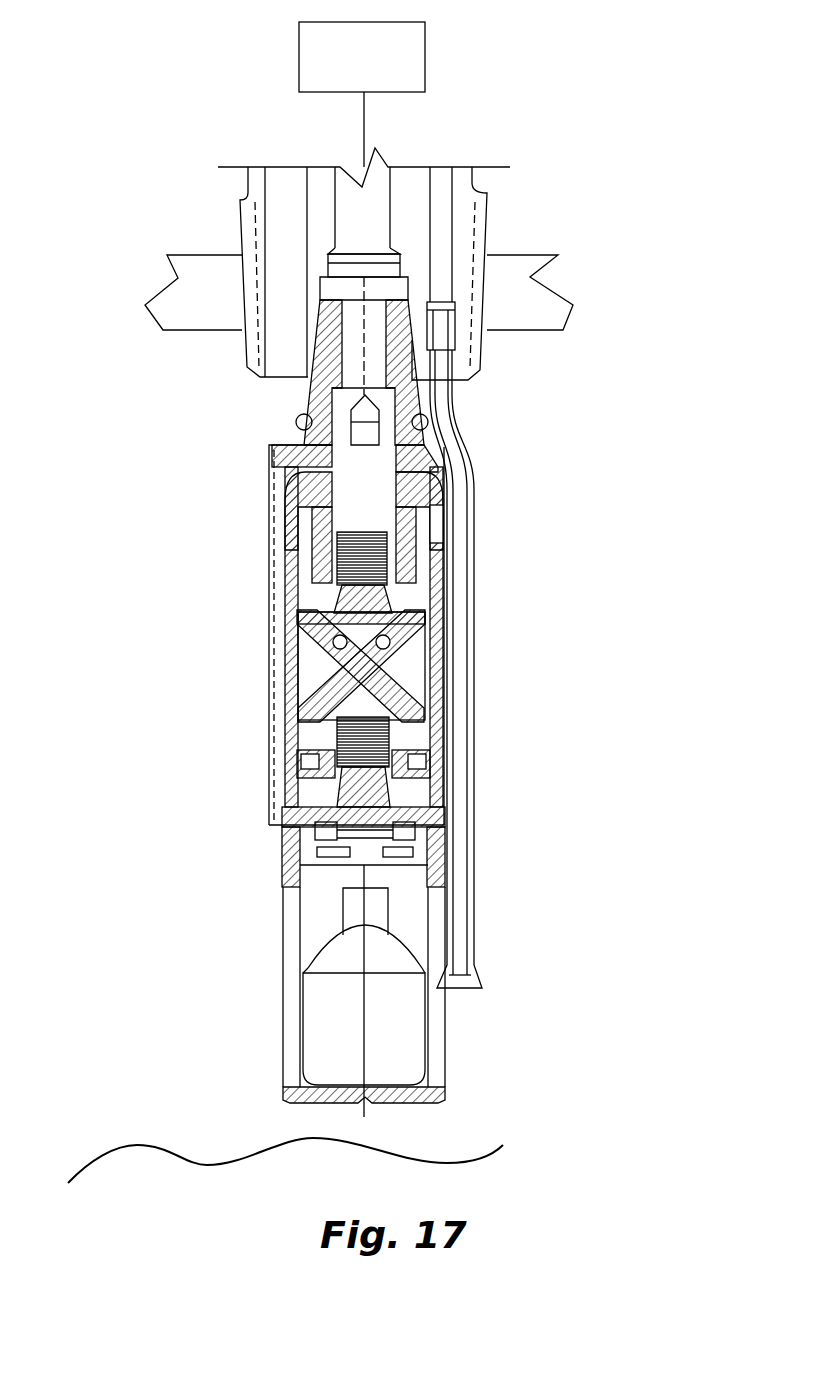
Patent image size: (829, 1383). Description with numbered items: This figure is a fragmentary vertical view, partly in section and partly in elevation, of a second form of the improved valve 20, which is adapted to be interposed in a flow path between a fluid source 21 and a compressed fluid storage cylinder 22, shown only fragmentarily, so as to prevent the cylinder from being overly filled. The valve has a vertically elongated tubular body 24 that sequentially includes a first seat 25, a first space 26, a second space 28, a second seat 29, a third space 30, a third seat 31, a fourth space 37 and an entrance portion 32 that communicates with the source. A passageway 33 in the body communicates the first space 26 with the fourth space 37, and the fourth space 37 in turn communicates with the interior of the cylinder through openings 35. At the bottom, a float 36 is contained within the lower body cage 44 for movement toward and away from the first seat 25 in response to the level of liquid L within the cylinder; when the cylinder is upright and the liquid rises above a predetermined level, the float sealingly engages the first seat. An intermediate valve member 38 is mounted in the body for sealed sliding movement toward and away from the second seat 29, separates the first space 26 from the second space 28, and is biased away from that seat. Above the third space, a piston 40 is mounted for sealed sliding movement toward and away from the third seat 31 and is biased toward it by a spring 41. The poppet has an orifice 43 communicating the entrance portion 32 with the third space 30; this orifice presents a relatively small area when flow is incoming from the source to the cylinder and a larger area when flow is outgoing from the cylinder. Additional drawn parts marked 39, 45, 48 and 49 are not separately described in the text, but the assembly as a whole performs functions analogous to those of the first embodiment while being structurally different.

The improved valve 20 is at (122, 465).
The fluid source 21 is at (427, 45).
The compressed fluid storage cylinder 22 is at (190, 252).
The tubular body 24 is at (453, 643).
The first seat 25 is at (332, 850).
The first space 26 is at (417, 797).
The second space 28 is at (410, 715).
The second seat 29 is at (405, 680).
The third space 30 is at (432, 514).
The third seat 31 is at (398, 447).
The entrance portion 32 is at (378, 227).
The passageway 33 is at (283, 705).
The openings 35 is at (450, 532).
The float 36 is at (327, 1017).
The fourth space 37 is at (440, 488).
The valve member 38 is at (305, 672).
The retainer 39 is at (305, 752).
The piston 40 is at (298, 510).
The spring 41 is at (290, 566).
The orifice 43 is at (428, 418).
The lower body cage 44 is at (445, 1017).
The collar 45 is at (277, 833).
The slot 48 is at (420, 690).
The piston 49 is at (290, 618).
The liquid level L is at (515, 1170).